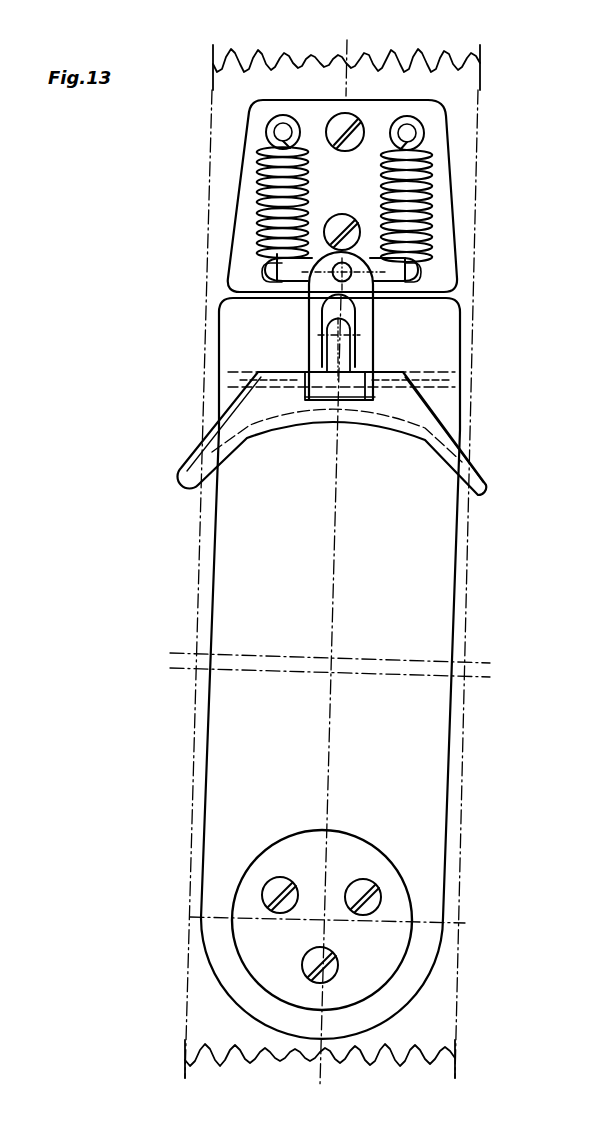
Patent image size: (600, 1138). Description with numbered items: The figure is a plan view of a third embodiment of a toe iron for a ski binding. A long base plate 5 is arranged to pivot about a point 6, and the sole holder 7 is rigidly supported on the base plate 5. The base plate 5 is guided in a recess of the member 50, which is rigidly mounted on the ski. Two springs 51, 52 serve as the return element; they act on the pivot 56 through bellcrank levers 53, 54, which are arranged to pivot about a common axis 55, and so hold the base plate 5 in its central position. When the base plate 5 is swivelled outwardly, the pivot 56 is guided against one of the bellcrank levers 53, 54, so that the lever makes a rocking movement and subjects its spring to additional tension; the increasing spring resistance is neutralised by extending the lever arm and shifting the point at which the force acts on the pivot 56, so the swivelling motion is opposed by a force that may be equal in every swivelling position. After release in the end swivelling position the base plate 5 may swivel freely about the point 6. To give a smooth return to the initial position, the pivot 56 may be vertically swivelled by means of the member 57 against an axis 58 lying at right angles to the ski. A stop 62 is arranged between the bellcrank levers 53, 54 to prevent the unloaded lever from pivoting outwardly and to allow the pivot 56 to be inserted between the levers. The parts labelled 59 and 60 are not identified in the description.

The base plate 5 is at (408, 736).
The point 6 is at (355, 855).
The sole holder 7 is at (418, 416).
The member 50 is at (432, 125).
The spring 51 is at (410, 183).
The spring 52 is at (262, 163).
The bellcrank lever 53 is at (362, 322).
The bellcrank lever 54 is at (317, 316).
The common axis 55 is at (262, 252).
The pivot 56 is at (343, 347).
The member 57 is at (347, 367).
The axis 58 is at (317, 389).
The left ring eye 59 is at (275, 133).
The right ring eye 60 is at (418, 143).
The stop 62 is at (328, 303).